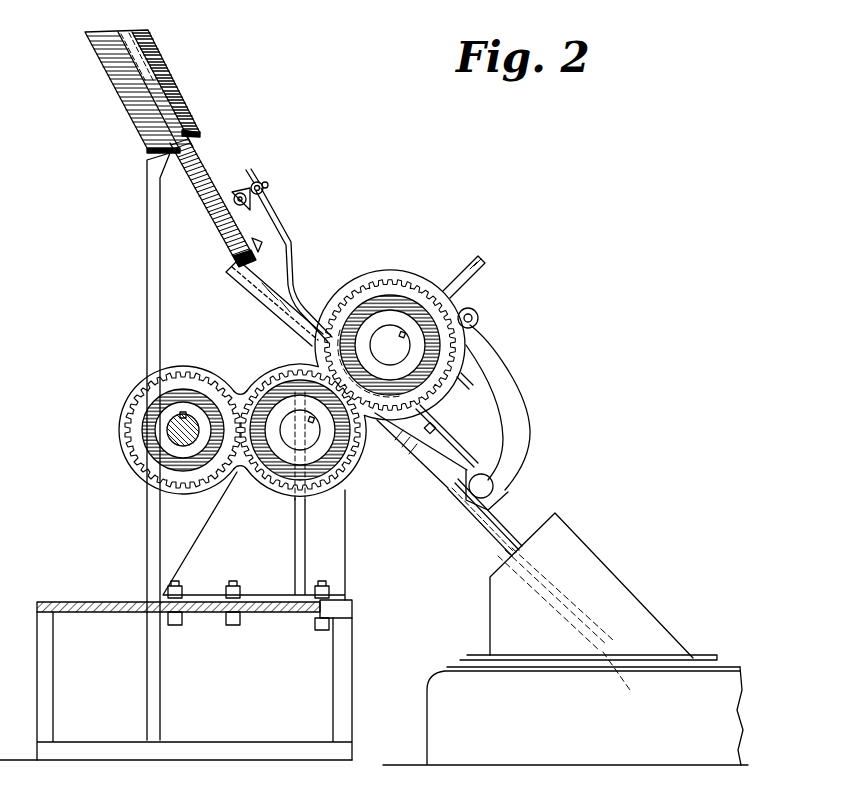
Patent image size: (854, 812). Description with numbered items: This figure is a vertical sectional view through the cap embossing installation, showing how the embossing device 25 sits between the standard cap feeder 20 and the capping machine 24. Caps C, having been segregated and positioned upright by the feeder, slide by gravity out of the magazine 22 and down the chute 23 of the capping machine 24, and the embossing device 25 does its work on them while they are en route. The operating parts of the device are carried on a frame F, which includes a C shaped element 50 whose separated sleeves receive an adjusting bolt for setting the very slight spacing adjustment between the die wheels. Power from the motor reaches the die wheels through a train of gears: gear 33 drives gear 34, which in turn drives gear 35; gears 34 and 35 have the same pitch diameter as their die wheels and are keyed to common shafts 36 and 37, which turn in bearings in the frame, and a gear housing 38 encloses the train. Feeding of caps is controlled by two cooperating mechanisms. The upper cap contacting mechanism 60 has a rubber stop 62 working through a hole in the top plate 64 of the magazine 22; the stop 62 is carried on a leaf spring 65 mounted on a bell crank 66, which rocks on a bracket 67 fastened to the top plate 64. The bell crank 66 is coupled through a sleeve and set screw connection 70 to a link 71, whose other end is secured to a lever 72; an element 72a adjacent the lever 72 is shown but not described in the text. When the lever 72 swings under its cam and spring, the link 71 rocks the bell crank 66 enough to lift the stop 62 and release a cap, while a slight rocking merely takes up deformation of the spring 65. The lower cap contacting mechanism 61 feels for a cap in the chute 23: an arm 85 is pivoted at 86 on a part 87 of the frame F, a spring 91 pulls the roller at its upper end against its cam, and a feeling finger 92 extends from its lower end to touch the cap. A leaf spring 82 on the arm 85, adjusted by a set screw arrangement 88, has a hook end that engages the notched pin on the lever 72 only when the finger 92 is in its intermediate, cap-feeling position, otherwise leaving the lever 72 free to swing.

The standard cap feeder 20 is at (172, 64).
The top plate of the magazine 64 is at (203, 150).
The magazine 22 is at (200, 197).
The bracket 67 is at (242, 190).
The bell crank 66 is at (257, 181).
The sleeve and set screw connection 70 is at (268, 184).
The leaf spring 65 is at (244, 202).
The caps C is at (226, 228).
The upper cap contacting mechanism 60 is at (270, 231).
The stop 62 is at (261, 250).
The link 71 is at (294, 260).
The chute 23 is at (240, 296).
The gear 35 is at (393, 283).
The shaft 37 is at (392, 330).
The C shaped element 50 is at (468, 272).
The embossing device 25 is at (488, 268).
The roller 72a is at (477, 312).
The lever 72 is at (477, 327).
The gear housing 38 is at (262, 372).
The shaft 36 is at (292, 418).
The gear 33 is at (130, 440).
The gear 34 is at (278, 492).
The spring 91 is at (465, 388).
The set screw arrangement 88 is at (442, 428).
The leaf spring 82 is at (458, 436).
The part of the frame 87 is at (528, 420).
The arm 85 is at (436, 462).
The pivot 86 is at (492, 496).
The lower cap contacting mechanism 61 is at (472, 512).
The feeling finger 92 is at (494, 530).
The capping machine 24 is at (586, 553).
The frame F is at (78, 600).